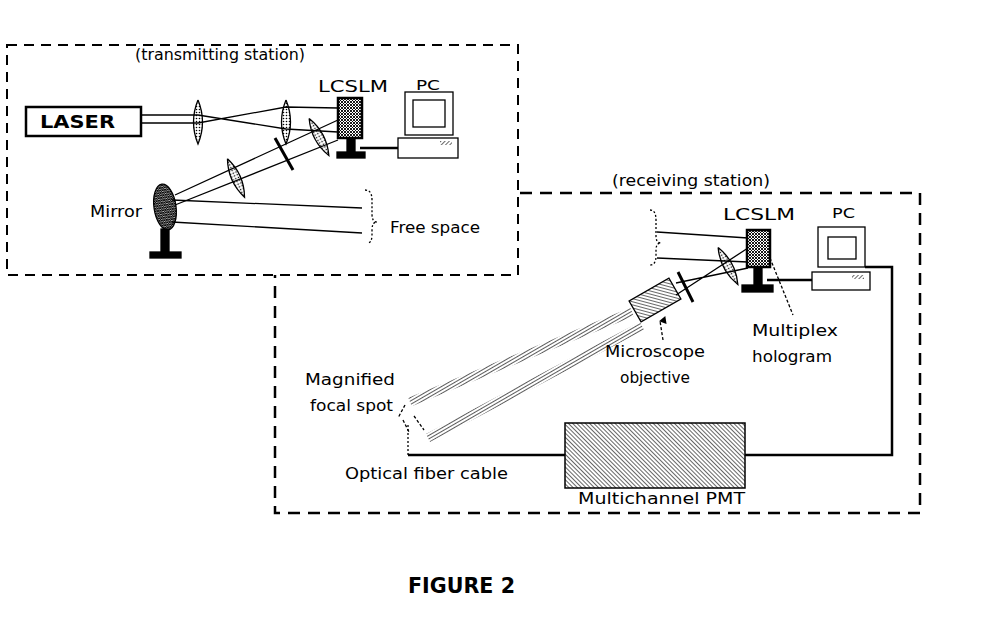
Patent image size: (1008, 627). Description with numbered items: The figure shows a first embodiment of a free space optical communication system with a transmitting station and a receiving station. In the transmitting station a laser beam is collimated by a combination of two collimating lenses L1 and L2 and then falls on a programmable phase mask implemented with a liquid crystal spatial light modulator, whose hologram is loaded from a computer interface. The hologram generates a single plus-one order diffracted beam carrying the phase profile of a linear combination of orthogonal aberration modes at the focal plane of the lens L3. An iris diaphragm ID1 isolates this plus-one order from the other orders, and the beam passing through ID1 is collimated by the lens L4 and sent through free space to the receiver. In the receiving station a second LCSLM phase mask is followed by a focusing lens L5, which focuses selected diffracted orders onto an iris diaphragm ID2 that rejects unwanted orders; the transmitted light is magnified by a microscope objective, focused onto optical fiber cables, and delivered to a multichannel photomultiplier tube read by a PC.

The collimating lens L1 is at (198, 111).
The collimating lens L2 is at (284, 111).
The lens L3 is at (319, 144).
The lens L4 is at (233, 168).
The focusing lens L5 is at (728, 276).
The iris diaphragm ID1 is at (290, 165).
The iris diaphragm ID2 is at (697, 299).